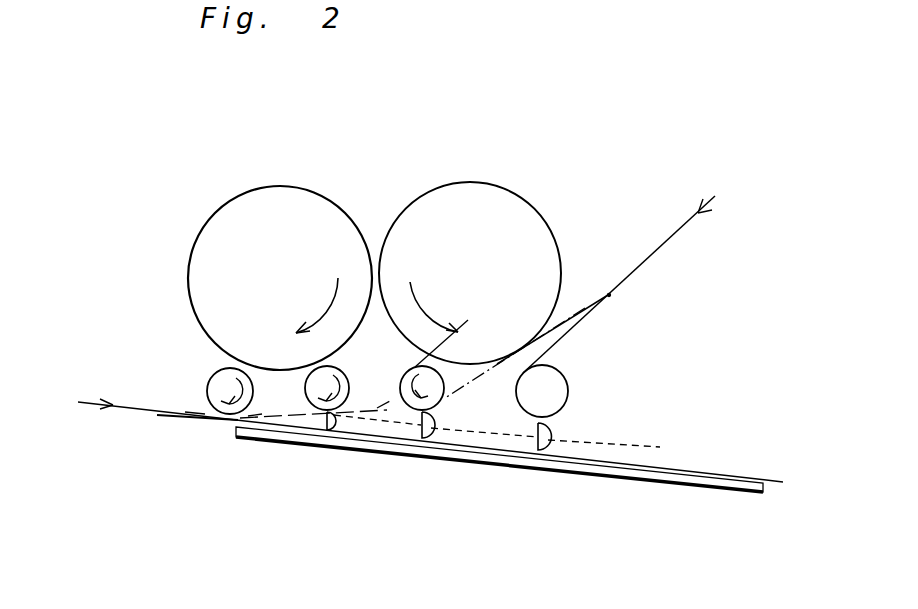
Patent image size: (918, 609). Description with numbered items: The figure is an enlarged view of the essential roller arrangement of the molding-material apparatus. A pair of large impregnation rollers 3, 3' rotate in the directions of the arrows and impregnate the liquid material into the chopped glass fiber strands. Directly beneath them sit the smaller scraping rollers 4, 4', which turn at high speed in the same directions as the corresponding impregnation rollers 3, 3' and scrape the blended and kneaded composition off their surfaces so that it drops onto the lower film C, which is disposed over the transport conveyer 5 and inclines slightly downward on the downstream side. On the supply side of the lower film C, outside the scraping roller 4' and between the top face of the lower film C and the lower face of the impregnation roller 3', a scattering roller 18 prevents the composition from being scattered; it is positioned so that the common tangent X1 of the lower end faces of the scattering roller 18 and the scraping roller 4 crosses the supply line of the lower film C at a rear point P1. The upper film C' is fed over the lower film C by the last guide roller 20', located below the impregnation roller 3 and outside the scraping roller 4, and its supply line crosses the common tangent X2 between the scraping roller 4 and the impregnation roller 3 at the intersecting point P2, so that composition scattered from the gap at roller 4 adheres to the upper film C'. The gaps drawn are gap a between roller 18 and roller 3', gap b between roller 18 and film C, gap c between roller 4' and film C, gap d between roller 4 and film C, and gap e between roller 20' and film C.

The impregnation roller 3' is at (280, 230).
The impregnation roller 3 is at (478, 229).
The scattering roller 18 is at (220, 382).
The scraping roller 4' is at (342, 374).
The scraping roller 4 is at (450, 392).
The last guide roller 20' is at (599, 391).
The transport conveyer 5 is at (515, 466).
The lower film C is at (421, 402).
The upper film C' is at (620, 284).
The rear point P1 is at (194, 417).
The intersecting point P2 is at (612, 296).
The common tangent X1 is at (377, 408).
The common tangent X2 is at (585, 308).
The gap a is at (247, 369).
The gap b is at (250, 415).
The gap c is at (374, 423).
The gap d is at (479, 425).
The gap e is at (599, 438).